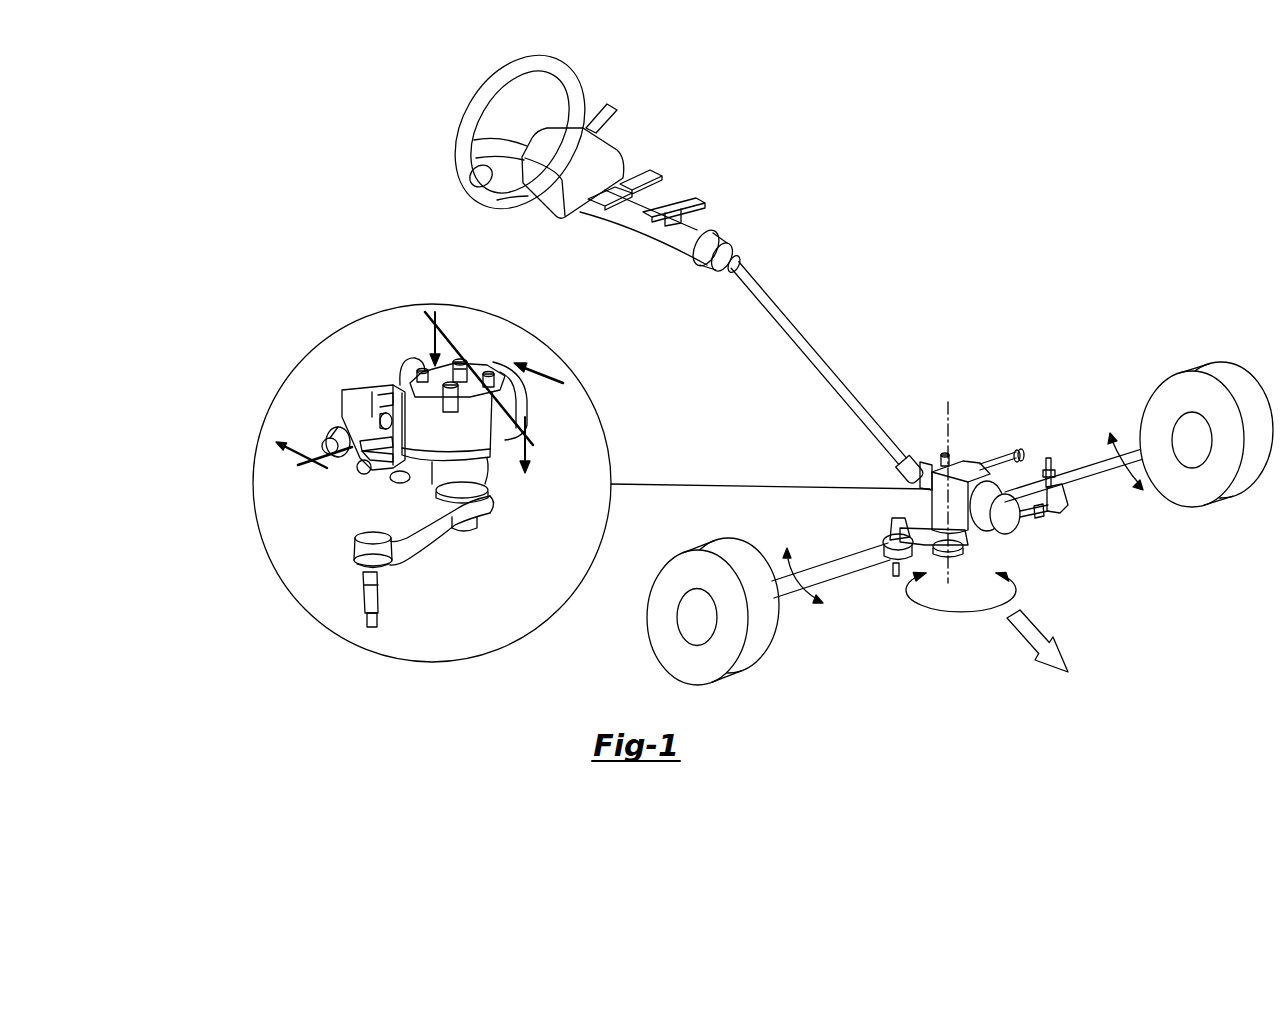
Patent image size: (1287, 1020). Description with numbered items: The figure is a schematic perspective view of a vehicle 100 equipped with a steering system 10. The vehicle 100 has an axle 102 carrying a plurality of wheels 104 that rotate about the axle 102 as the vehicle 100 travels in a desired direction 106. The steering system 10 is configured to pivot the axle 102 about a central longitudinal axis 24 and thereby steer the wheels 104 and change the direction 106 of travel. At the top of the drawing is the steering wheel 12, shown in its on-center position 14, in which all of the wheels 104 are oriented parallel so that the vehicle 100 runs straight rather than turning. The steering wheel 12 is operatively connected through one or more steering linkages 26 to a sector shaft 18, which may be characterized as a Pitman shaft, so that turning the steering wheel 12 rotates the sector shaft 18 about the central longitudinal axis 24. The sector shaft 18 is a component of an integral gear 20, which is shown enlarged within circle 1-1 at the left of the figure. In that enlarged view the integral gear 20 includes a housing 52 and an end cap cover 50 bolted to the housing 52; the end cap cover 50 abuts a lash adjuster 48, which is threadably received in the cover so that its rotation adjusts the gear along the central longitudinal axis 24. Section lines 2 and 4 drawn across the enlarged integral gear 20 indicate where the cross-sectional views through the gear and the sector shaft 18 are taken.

The vehicle 100 is at (368, 92).
The steering system 10 is at (708, 130).
The steering wheel 12 is at (585, 82).
The on-center position 14 is at (708, 130).
The steering linkages 26 is at (803, 331).
The central longitudinal axis 24 is at (952, 422).
The lash adjuster 48 is at (942, 462).
The axle 102 is at (1109, 455).
The wheels 104 is at (1229, 372).
The sector shaft 18 is at (970, 558).
The direction of travel 106 is at (1017, 636).
The housing 52 is at (478, 433).
The end cap cover 50 is at (492, 443).
The integral gear 20 is at (436, 594).
The section line 2- 2 is at (476, 404).
The section line 4- 4 is at (426, 430).
The circle 1-1 is at (424, 483).